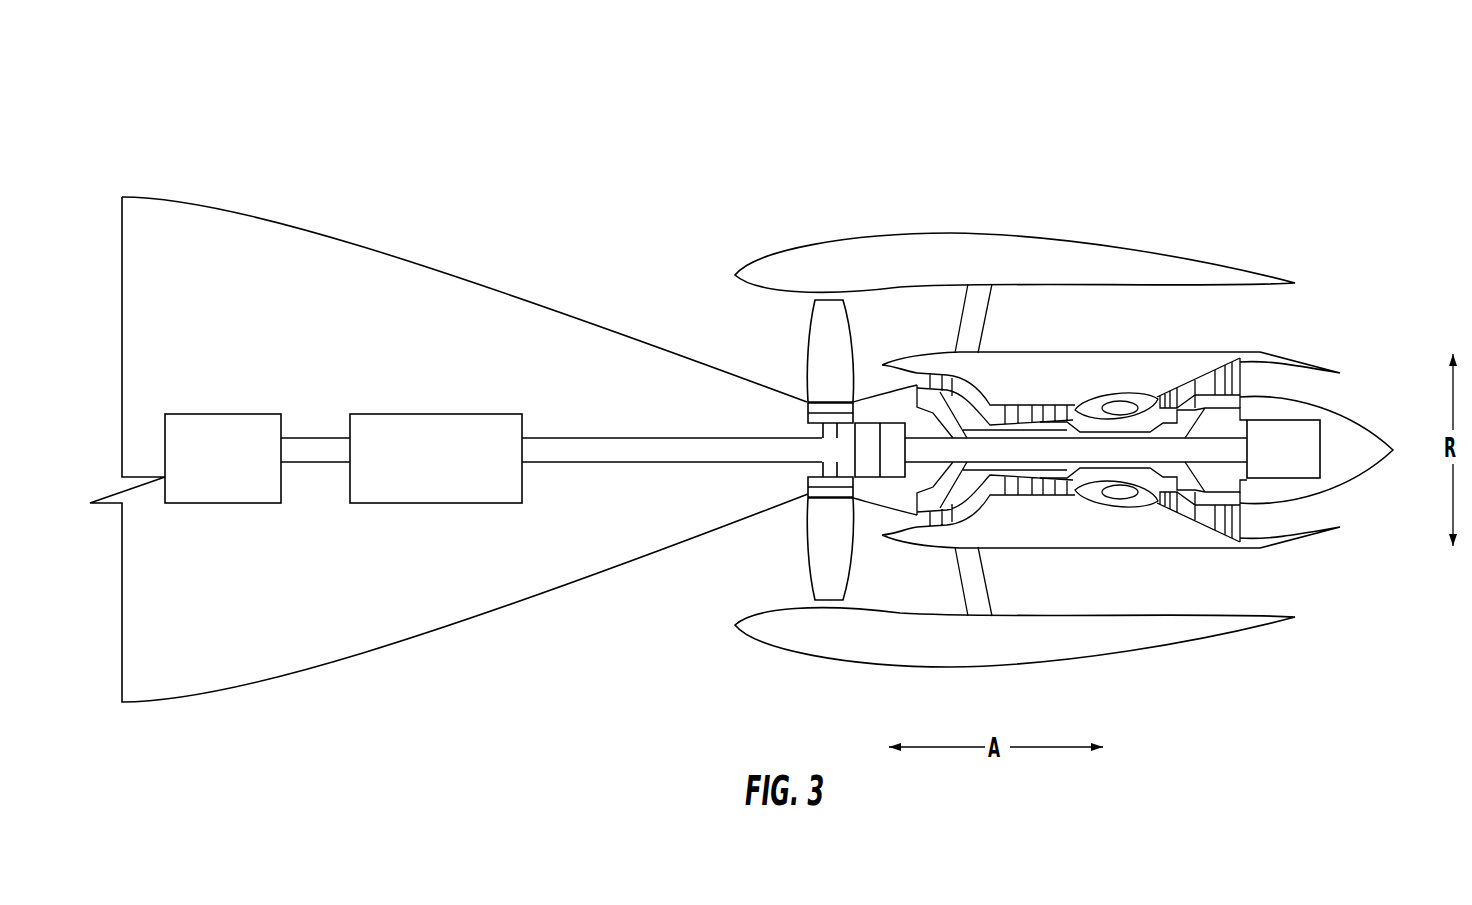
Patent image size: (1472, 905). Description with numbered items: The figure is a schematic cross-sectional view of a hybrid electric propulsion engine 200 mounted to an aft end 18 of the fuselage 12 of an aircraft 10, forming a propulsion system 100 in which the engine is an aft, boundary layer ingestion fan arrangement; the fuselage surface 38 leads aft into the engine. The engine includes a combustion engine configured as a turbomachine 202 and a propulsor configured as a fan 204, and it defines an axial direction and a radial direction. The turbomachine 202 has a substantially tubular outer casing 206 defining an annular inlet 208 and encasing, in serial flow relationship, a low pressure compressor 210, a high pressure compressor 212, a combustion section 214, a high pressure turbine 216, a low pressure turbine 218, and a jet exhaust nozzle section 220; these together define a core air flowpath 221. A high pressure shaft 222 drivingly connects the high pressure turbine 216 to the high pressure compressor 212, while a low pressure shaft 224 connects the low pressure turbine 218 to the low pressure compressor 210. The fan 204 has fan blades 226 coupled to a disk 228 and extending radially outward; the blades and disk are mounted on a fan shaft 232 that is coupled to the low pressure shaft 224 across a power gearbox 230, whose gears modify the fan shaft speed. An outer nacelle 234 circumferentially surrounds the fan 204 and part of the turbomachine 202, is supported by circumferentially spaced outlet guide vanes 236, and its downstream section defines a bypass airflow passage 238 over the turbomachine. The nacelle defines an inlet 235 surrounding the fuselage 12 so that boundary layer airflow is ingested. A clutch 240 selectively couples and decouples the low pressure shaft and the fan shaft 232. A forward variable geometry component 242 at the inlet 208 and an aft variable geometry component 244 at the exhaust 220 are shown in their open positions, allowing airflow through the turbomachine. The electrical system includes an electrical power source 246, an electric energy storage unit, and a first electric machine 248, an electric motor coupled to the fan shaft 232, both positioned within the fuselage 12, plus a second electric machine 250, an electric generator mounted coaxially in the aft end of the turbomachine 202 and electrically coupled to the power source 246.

The aircraft 10 is at (238, 180).
The fuselage 12 is at (260, 242).
The aft end 18 is at (493, 170).
The outer surface of fuselage 38 is at (372, 240).
The propulsion system 100 is at (850, 100).
The hybrid electric propulsion engine 200 is at (979, 152).
The turbomachine 202 is at (1078, 352).
The fan 204 is at (797, 325).
The outer casing 206 is at (1120, 337).
The annular inlet 208 is at (868, 392).
The low pressure compressor 210 is at (940, 530).
The high pressure compressor 212 is at (1053, 498).
The combustion section 214 is at (1128, 521).
The high pressure turbine 216 is at (1168, 524).
The low pressure turbine 218 is at (1216, 538).
The jet exhaust nozzle section 220 is at (1280, 523).
The core air flowpath 221 is at (980, 494).
The high pressure shaft 222 is at (1083, 484).
The low pressure shaft 224 is at (982, 500).
The fan blades 226 is at (807, 556).
The disk 228 is at (808, 494).
The power gearbox 230 is at (863, 480).
The fan shaft 232 is at (712, 440).
The outer nacelle 234 is at (1002, 233).
The inlet 235 is at (716, 590).
The outlet guide vanes 236 is at (983, 322).
The bypass airflow passage 238 is at (1193, 333).
The clutch 240 is at (890, 482).
The forward variable geometry component 242 is at (902, 357).
The aft variable geometry component 244 is at (1300, 360).
The electrical power source 246 is at (241, 477).
The first electric machine 248 is at (455, 477).
The second electric machine 250 is at (1301, 462).